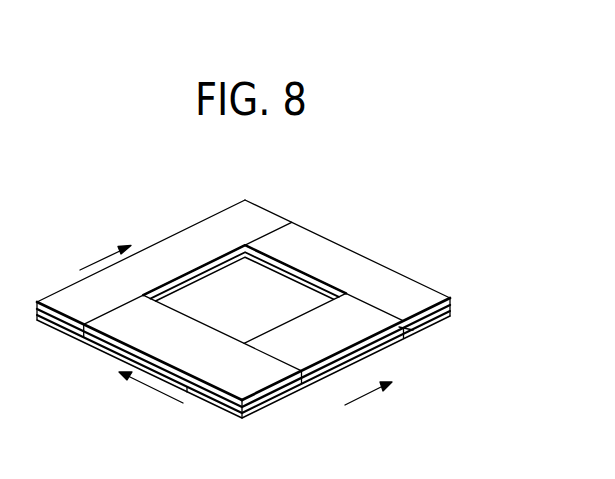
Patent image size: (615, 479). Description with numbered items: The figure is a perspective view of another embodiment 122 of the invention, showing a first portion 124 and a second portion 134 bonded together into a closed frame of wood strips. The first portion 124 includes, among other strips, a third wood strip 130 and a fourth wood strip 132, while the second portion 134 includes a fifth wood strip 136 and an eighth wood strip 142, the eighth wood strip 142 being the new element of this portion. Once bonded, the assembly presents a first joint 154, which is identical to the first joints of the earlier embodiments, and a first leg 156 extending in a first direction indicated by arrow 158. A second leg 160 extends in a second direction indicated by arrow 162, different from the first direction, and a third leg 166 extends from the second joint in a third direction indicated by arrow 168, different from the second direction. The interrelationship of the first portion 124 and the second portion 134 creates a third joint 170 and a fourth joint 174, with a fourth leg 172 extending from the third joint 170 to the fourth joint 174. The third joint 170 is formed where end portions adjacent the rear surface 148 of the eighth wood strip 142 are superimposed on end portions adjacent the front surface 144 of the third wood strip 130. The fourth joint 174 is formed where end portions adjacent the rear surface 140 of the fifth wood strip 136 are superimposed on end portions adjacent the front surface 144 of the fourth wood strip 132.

The embodiment 122 is at (270, 299).
The first portion 124 is at (270, 334).
The third wood strip 130 is at (244, 246).
The fourth wood strip 132 is at (404, 354).
The second portion 134 is at (270, 319).
The fifth wood strip 136 is at (261, 303).
The rear surface 140 is at (416, 248).
The eighth wood strip 142 is at (304, 183).
The front surface 144 is at (329, 354).
The rear surface 148 is at (199, 181).
The first joint 154 is at (169, 383).
The first leg 156 is at (346, 370).
The arrow 158 is at (383, 411).
The second leg 160 is at (73, 374).
The arrow 162 is at (147, 409).
The third leg 166 is at (164, 258).
The arrow 168 is at (91, 244).
The third joint 170 is at (282, 162).
The fourth leg 172 is at (347, 252).
The fourth joint 174 is at (476, 341).